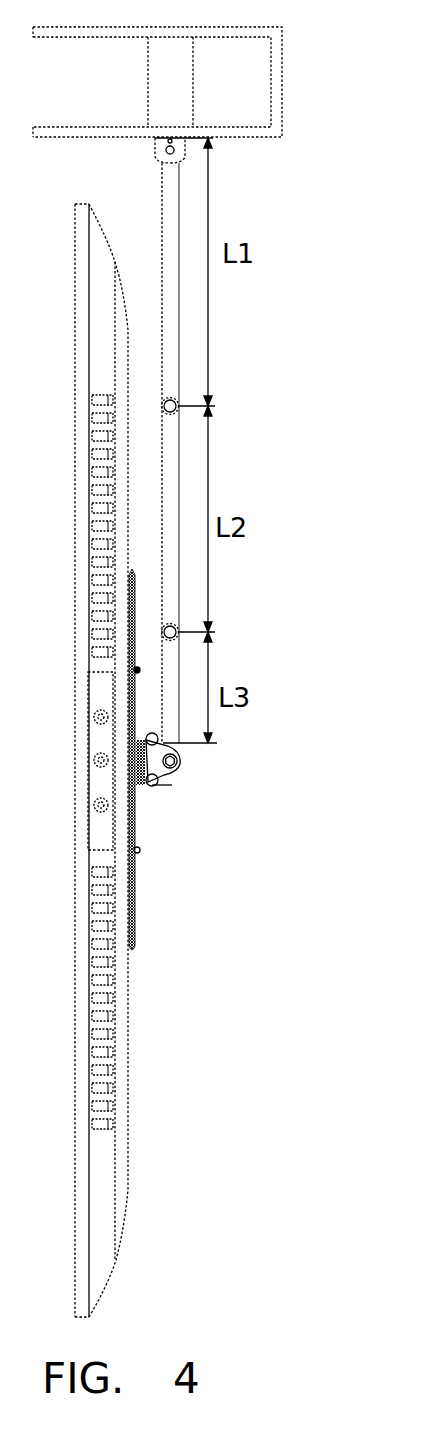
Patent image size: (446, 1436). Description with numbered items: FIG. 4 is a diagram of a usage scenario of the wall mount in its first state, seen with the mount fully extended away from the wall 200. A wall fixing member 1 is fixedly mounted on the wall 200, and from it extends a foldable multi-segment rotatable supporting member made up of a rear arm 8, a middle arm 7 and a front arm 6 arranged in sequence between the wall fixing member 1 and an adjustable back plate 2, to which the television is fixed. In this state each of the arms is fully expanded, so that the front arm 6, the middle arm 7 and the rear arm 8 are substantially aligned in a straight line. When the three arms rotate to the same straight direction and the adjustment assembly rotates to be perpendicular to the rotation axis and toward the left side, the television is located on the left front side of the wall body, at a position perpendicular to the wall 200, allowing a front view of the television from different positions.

The wall 200 is at (277, 91).
The wall fixing member 1 is at (136, 138).
The rear arm 8 is at (167, 231).
The middle arm 7 is at (170, 504).
The front arm 6 is at (173, 693).
The adjustable back plate 2 is at (127, 922).